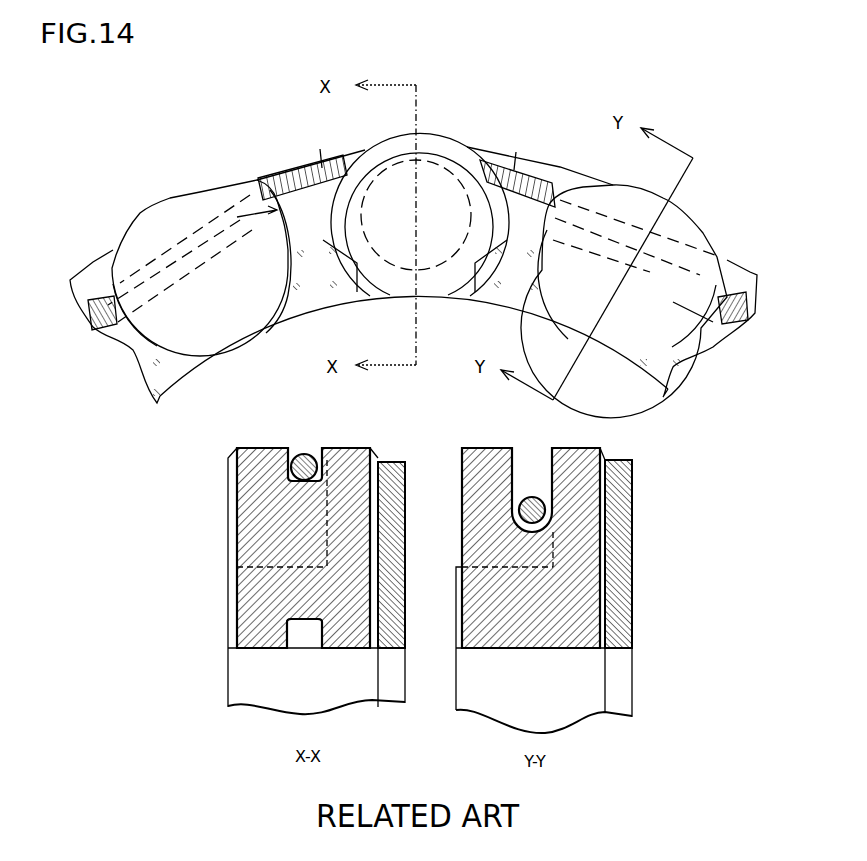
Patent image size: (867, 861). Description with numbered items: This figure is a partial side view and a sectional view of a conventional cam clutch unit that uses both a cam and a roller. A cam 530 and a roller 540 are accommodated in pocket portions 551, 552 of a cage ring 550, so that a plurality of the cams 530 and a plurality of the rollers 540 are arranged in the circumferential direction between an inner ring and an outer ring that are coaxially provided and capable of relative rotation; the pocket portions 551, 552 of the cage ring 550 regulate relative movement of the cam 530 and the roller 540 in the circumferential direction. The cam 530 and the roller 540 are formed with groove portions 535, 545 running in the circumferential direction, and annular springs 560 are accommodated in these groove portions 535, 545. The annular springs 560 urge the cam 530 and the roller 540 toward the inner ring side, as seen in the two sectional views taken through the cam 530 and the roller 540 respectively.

The cam 530 is at (183, 213).
The groove portion 535 is at (546, 441).
The roller 540 is at (397, 158).
The groove portion 545 is at (316, 655).
The cage ring 550 is at (550, 162).
The pocket portion 551 is at (98, 254).
The pocket portion 552 is at (489, 138).
The annular spring 560 is at (303, 167).